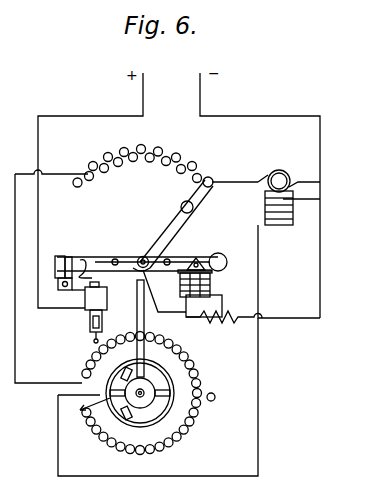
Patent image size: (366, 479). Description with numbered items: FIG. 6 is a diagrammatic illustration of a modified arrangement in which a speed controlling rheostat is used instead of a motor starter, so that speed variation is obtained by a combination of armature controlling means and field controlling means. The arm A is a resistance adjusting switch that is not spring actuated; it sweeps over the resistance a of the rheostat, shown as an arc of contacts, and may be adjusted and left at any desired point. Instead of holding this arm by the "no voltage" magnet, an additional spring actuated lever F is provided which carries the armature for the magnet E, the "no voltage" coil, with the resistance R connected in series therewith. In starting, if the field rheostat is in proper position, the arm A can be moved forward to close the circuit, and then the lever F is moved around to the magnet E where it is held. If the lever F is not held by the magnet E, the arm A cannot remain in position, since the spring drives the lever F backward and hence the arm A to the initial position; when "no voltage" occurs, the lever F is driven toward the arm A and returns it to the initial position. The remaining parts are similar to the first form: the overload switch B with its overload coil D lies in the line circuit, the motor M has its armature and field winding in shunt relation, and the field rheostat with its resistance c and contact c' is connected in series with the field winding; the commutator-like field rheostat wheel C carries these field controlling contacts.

The resistance a is at (141, 155).
The arm A is at (160, 232).
The overload switch B is at (93, 260).
The overload coil D is at (108, 300).
The "no voltage" magnet E is at (200, 287).
The spring actuated lever F is at (194, 258).
The motor M is at (289, 211).
The resistance R is at (221, 326).
The commutator wheel C is at (142, 367).
The contact of the field rheostat c' is at (95, 409).
The resistance of the field rheostat c is at (207, 397).